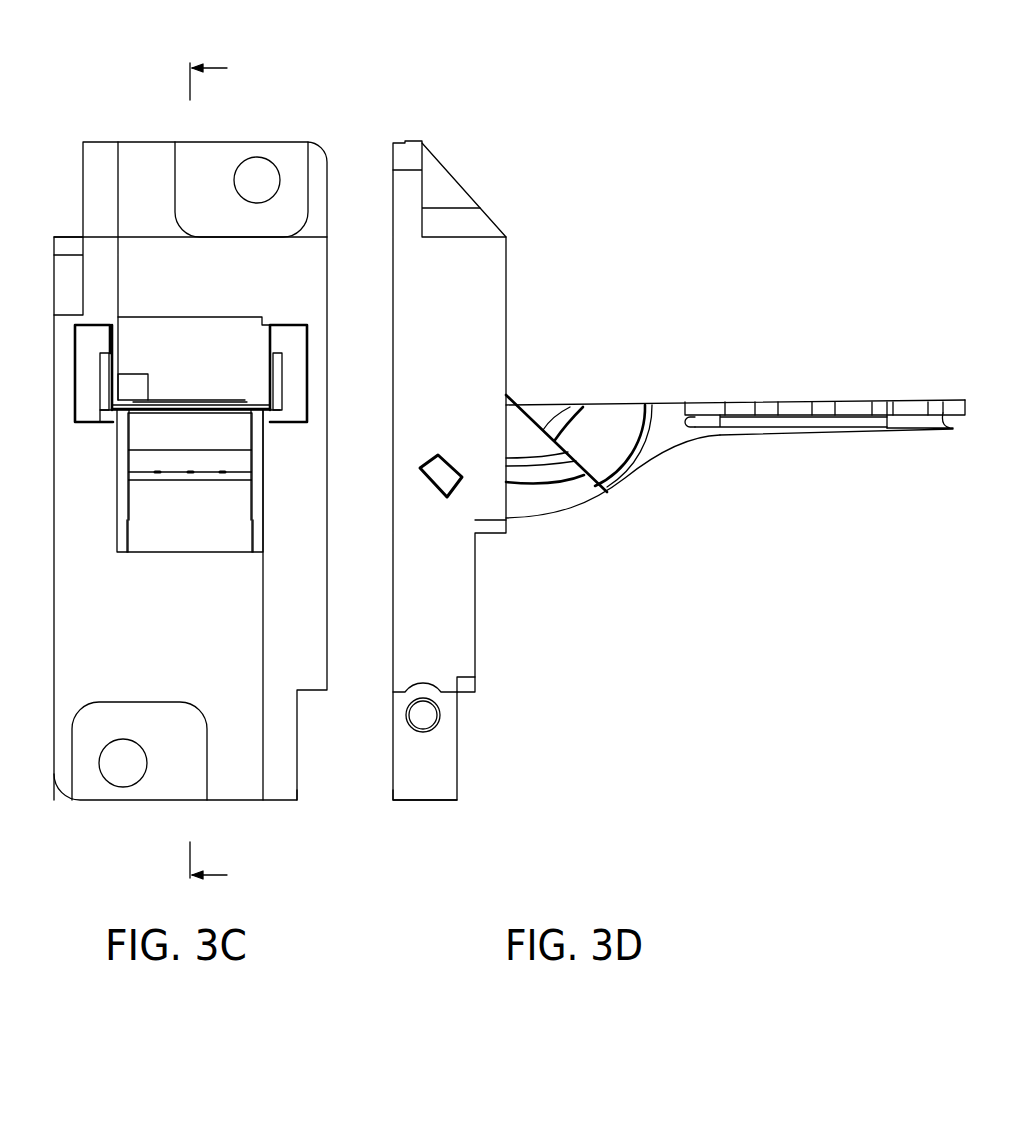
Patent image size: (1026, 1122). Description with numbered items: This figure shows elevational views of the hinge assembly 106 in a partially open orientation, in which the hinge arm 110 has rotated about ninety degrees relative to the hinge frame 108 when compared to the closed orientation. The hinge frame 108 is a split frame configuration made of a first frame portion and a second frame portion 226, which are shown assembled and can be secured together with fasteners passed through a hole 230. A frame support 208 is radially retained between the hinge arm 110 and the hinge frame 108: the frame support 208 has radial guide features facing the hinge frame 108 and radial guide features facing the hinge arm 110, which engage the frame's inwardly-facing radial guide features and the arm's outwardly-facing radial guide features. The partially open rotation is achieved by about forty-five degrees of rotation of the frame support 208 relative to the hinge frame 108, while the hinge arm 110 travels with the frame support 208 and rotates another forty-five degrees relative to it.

In FIG. 3C, the hinge assembly 106 is at (330, 45).
In FIG. 3D, the hinge assembly 106 is at (735, 93).
In FIG. 3C, the hinge frame 108 is at (100, 142).
In FIG. 3D, the hinge frame 108 is at (422, 143).
In FIG. 3D, the hinge arm 110 is at (793, 435).
In FIG. 3D, the frame support 208 is at (572, 508).
In FIG. 3C, the frame portion 226 is at (58, 787).
In FIG. 3D, the frame portion 226 is at (433, 800).
In FIG. 3D, the hole 230 is at (432, 713).